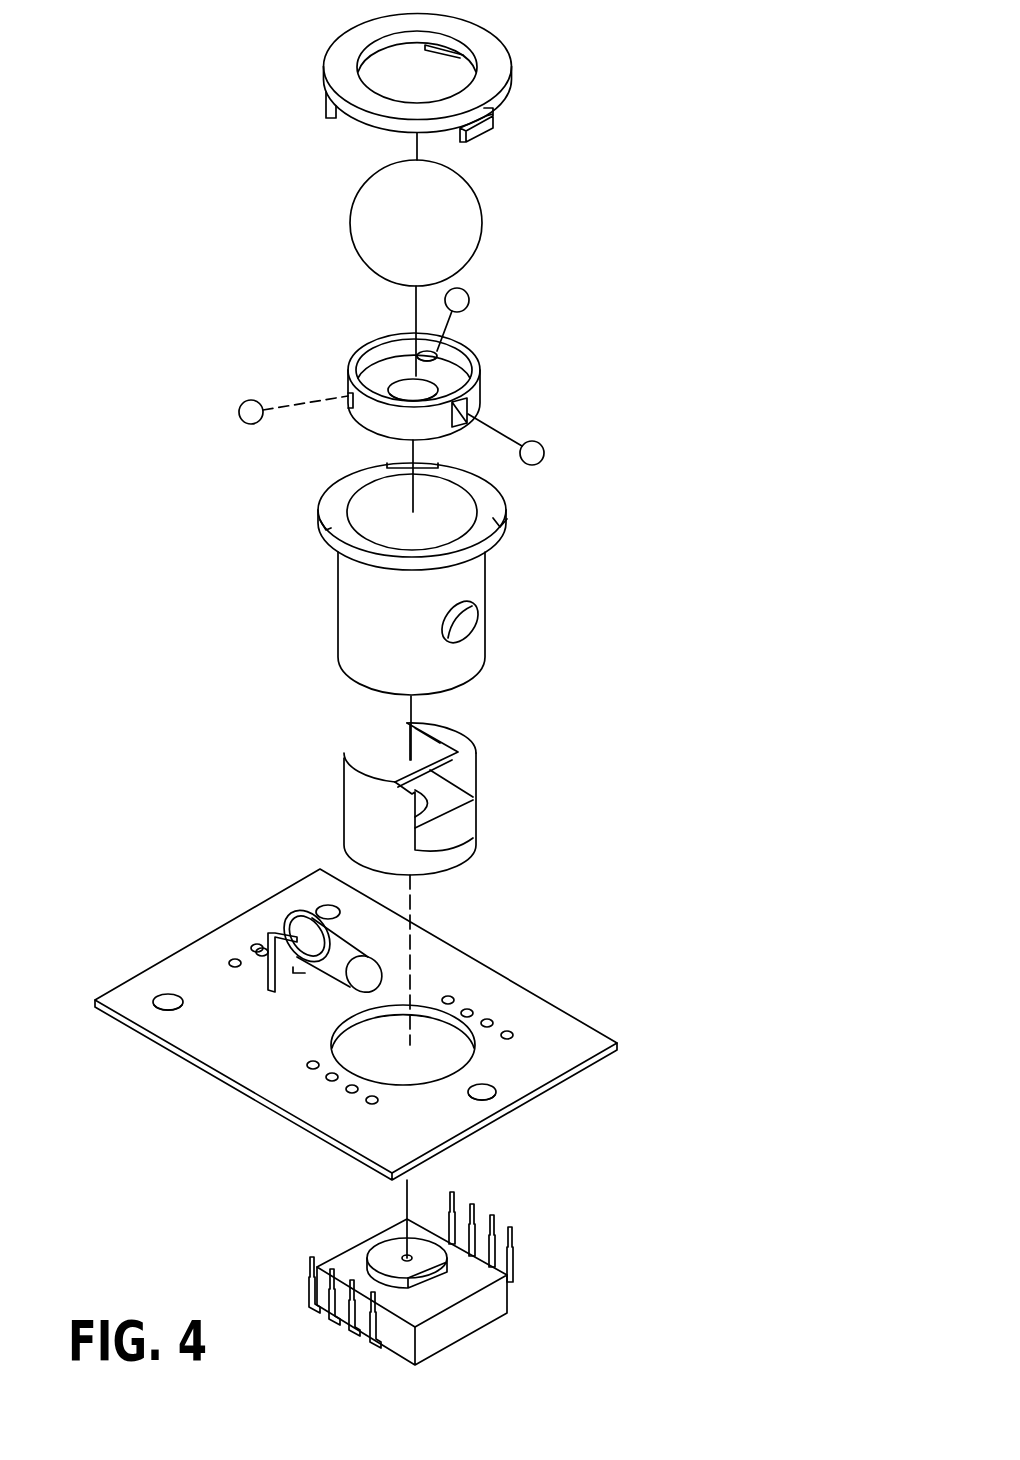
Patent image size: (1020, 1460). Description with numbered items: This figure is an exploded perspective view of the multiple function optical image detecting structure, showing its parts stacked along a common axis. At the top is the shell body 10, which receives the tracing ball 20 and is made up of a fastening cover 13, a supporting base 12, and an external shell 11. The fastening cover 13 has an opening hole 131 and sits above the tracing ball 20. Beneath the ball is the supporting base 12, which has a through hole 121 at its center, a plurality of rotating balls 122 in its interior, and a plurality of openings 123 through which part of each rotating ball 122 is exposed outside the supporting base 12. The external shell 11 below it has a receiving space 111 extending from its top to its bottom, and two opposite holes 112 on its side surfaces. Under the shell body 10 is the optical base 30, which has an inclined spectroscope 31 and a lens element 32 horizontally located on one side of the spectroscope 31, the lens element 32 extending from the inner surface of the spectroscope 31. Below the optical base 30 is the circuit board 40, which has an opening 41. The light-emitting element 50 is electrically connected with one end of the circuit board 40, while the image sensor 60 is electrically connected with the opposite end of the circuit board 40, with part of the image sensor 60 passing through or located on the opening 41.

The shell body 10 is at (624, 26).
The external shell 11 is at (512, 582).
The receiving space 111 is at (403, 529).
The holes 112 is at (478, 621).
The supporting base 12 is at (500, 361).
The through hole 121 is at (407, 392).
The rotating balls 122 is at (538, 443).
The openings 123 is at (435, 358).
The fastening cover 13 is at (527, 72).
The opening hole 131 is at (388, 68).
The tracing ball 20 is at (488, 200).
The optical base 30 is at (482, 784).
The spectroscope 31 is at (438, 753).
The lens element 32 is at (427, 790).
The circuit board 40 is at (212, 928).
The opening 41 is at (435, 1033).
The light-emitting element 50 is at (318, 950).
The image sensor 60 is at (497, 1212).